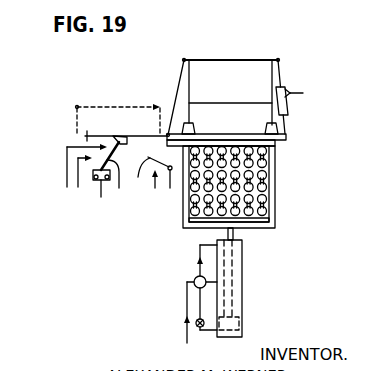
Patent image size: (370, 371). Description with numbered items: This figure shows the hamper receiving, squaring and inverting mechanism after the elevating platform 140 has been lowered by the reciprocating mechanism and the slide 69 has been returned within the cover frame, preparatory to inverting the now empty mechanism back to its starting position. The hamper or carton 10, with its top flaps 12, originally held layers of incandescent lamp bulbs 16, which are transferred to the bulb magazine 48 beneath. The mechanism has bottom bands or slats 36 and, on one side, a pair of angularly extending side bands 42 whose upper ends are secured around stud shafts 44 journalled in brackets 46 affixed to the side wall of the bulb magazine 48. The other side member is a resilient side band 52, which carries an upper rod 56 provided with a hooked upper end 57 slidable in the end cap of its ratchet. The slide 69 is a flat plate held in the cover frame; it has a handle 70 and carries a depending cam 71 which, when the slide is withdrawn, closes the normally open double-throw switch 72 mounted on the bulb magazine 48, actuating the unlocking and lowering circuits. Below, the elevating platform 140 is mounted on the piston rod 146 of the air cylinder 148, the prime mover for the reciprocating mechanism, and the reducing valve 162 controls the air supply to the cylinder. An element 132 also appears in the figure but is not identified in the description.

The hamper or carton 10 is at (238, 75).
The top flaps 12 is at (182, 104).
The incandescent lamp bulbs 16 is at (263, 153).
The bottom bands or slats 36 is at (228, 52).
The angularly extending side bands or slats 42 is at (180, 80).
The stud shafts 44 is at (167, 132).
The brackets 46 is at (167, 143).
The bulb magazine 48 is at (279, 203).
The resilient side band 52 is at (283, 78).
The upper rod 56 is at (288, 121).
The hooked upper end 57 is at (288, 140).
The slide 69 is at (102, 136).
The handle 70 is at (85, 135).
The depending cam 71 is at (125, 136).
The double-throw switch 72 is at (97, 179).
The valve 132 is at (150, 176).
The elevating platform 140 is at (255, 228).
The piston rod 146 is at (228, 237).
The air cylinder 148 is at (242, 276).
The reducing valve 162 is at (198, 327).